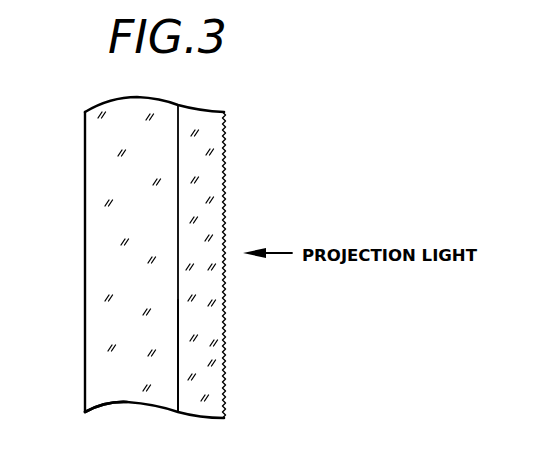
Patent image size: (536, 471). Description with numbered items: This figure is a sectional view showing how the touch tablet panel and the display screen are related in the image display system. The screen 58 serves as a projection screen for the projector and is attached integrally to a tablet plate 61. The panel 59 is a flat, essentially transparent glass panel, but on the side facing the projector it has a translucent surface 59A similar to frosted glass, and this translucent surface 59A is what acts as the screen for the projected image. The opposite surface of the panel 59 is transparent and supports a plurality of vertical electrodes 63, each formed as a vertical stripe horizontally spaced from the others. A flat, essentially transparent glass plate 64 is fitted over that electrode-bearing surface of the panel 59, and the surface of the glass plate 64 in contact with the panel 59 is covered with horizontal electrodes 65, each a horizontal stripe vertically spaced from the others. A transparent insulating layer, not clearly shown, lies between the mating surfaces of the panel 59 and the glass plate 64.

The screen 58 is at (287, 183).
The panel 59 is at (210, 408).
The translucent surface 59A is at (225, 373).
The tablet plate 61 is at (98, 263).
The vertical electrodes 63 is at (180, 415).
The glass plate 64 is at (108, 393).
The horizontal electrodes 65 is at (178, 413).